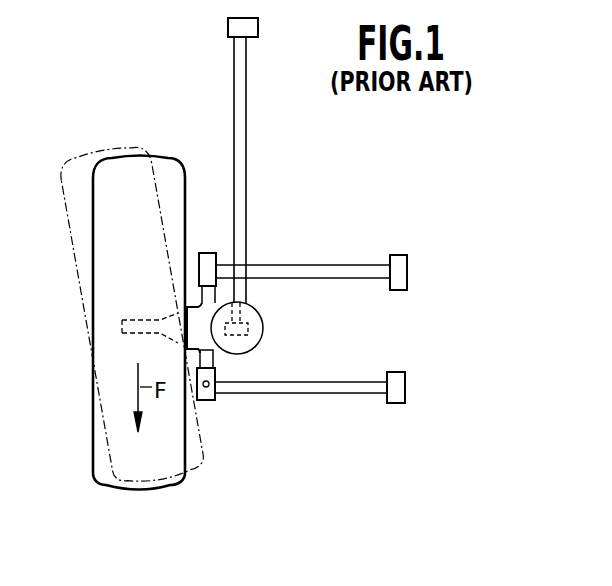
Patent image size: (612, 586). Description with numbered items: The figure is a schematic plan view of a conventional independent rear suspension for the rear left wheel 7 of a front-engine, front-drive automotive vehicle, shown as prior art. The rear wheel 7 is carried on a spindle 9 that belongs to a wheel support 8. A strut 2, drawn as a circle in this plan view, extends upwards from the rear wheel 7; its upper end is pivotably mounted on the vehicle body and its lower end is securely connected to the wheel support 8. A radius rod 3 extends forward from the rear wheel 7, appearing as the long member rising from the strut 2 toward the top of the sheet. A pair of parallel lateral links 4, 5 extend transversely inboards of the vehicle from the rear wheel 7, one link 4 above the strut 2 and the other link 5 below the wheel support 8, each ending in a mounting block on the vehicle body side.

The strut 2 is at (259, 326).
The radius rod 3 is at (247, 186).
The lateral link 4 is at (328, 264).
The lateral link 5 is at (322, 381).
The rear left wheel 7 is at (165, 178).
The wheel support 8 is at (212, 349).
The spindle 9 is at (122, 333).